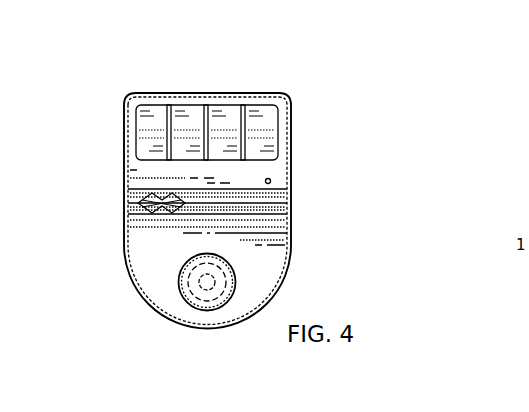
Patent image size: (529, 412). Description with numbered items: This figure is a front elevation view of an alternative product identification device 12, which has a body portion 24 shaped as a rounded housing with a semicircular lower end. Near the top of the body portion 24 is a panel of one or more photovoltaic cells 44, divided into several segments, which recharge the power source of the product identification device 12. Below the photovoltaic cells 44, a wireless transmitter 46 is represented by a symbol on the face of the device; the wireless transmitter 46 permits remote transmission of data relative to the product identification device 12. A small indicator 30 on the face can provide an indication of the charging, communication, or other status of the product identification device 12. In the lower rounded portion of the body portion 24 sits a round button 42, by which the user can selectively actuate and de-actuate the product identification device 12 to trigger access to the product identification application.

The product identification device 12 is at (321, 117).
The body portion 24 is at (126, 167).
The indicator 30 is at (271, 181).
The button 42 is at (179, 270).
The photovoltaic cell 44 is at (182, 125).
The wireless transmitter 46 is at (138, 204).